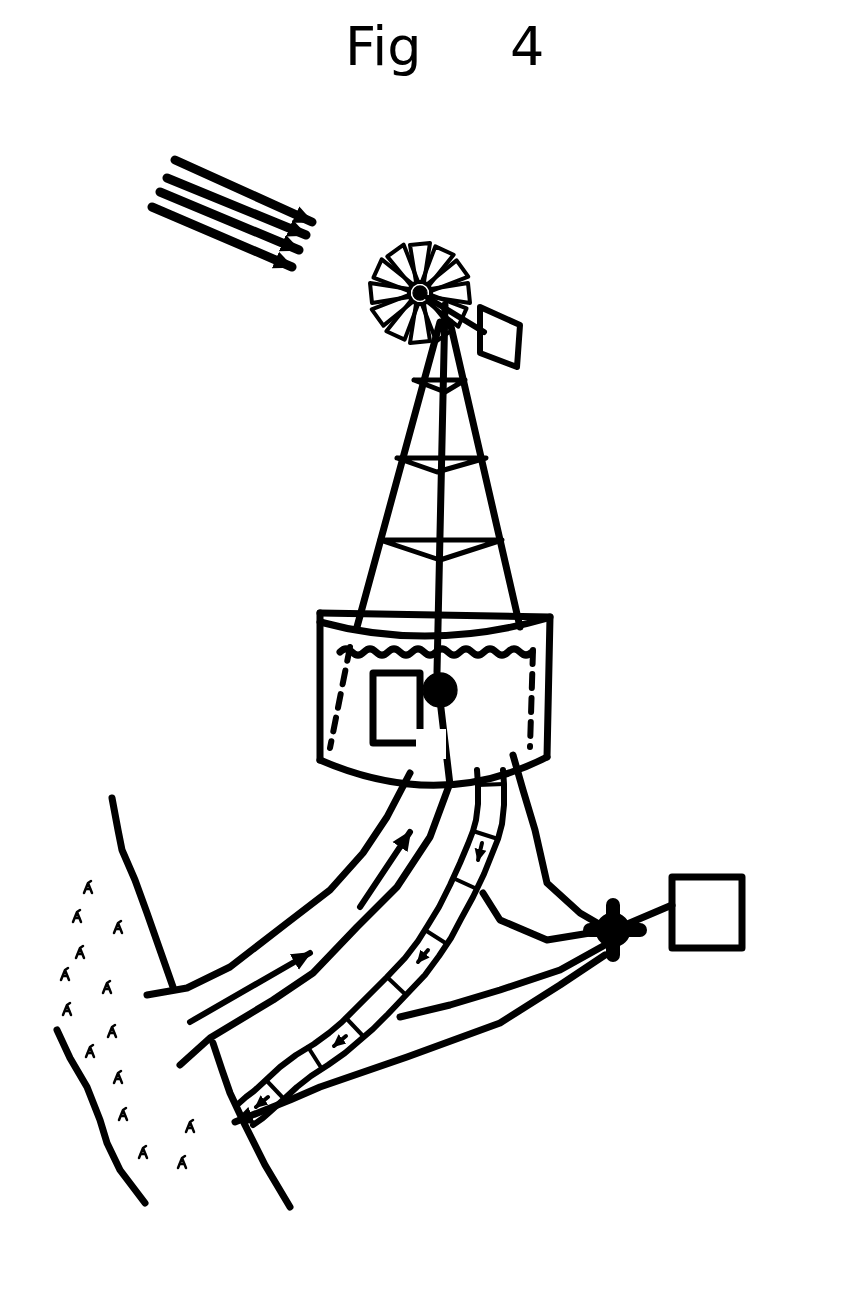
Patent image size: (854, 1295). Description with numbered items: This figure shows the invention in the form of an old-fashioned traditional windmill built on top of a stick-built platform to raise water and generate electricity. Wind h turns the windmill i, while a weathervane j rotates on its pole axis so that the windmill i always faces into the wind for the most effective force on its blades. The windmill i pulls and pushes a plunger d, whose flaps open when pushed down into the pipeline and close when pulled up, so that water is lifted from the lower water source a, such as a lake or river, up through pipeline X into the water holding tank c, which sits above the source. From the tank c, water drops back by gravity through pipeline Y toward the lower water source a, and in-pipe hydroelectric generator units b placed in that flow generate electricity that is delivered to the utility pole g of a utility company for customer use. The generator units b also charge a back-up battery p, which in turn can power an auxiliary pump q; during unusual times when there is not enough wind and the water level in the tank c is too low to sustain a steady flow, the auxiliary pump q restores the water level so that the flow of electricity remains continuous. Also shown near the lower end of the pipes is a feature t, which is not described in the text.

The wind h is at (219, 213).
The windmill i is at (460, 250).
The weathervane j is at (530, 322).
The water holding tank c is at (312, 697).
The auxiliary pump q is at (396, 708).
The plunger d is at (436, 729).
The pipeline Y is at (498, 744).
The pipeline X is at (298, 919).
The in-pipe hydroelectric generator units b is at (370, 947).
The back-up battery p is at (683, 912).
The utility pole g is at (636, 956).
The lower water source a is at (127, 1024).
The outlet t is at (411, 1057).